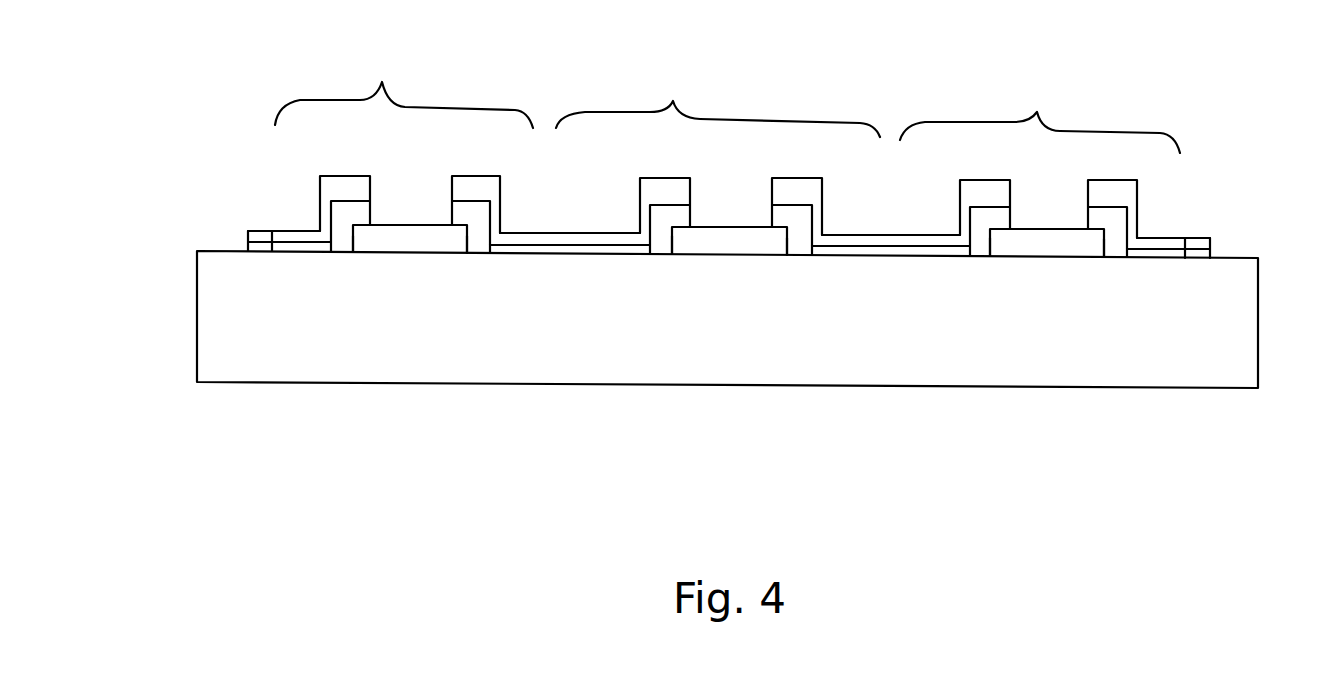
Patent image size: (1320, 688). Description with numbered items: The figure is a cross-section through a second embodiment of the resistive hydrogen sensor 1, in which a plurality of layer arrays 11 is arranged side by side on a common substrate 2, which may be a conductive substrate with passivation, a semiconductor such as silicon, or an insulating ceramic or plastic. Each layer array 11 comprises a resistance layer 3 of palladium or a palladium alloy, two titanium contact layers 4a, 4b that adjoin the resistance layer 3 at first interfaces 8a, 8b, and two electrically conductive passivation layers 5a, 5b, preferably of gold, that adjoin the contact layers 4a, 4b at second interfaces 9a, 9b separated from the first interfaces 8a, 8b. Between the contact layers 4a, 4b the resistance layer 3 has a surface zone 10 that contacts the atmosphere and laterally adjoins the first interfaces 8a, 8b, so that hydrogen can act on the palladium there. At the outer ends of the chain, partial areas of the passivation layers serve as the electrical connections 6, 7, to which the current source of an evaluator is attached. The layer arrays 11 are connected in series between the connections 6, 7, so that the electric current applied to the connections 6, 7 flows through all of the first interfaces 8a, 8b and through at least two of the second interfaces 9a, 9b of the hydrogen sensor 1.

The resistive hydrogen sensor 1 is at (1147, 596).
The substrate 2 is at (597, 360).
The resistance layer 3 is at (400, 246).
The electrical contact layer 4a is at (337, 250).
The electrical contact layer 4b is at (480, 250).
The passivation layer 5a is at (347, 183).
The passivation layer 5b is at (472, 183).
The electrical connection 6 is at (262, 231).
The electrical connection 7 is at (1200, 233).
The first interface 8a is at (358, 246).
The first interface 8b is at (460, 246).
The second interface 9a is at (323, 217).
The second interface 9b is at (503, 213).
The surface zone 10 is at (403, 224).
The layer array 11 is at (1056, 97).